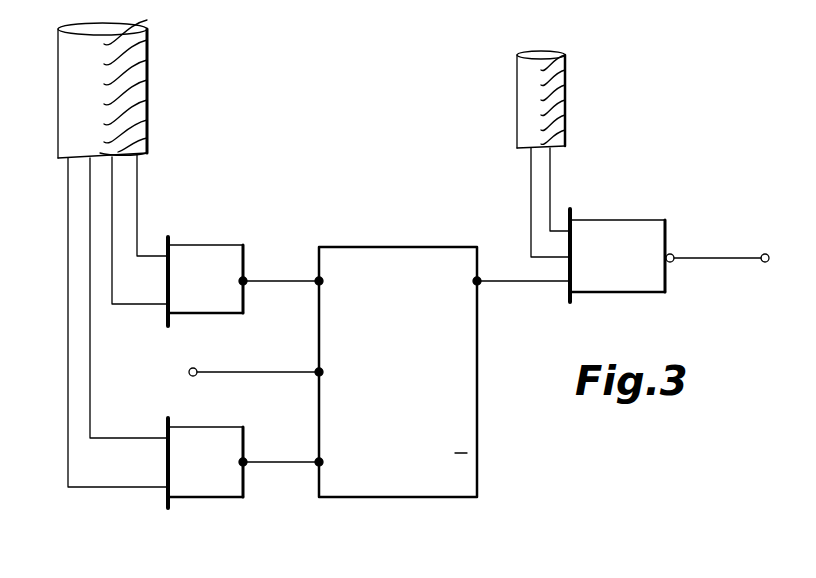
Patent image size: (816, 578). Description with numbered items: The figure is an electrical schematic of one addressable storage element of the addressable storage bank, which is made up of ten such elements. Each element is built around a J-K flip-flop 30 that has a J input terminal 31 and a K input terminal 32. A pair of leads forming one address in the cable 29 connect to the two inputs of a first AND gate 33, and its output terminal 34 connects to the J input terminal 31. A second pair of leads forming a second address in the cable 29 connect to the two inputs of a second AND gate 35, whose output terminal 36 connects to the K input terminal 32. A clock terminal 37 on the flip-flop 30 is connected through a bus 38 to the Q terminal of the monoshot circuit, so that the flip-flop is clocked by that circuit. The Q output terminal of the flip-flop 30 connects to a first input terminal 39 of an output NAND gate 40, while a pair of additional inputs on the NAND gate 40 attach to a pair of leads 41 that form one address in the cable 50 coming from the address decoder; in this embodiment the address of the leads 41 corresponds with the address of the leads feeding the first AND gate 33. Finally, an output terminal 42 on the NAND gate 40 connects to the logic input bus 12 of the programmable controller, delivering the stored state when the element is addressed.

The logic input bus 12 is at (768, 252).
The cable 29 is at (147, 84).
The J-K flip-flop 30 is at (412, 367).
The J input terminal 31 is at (317, 278).
The K input terminal 32 is at (317, 465).
The first AND gate 33 is at (222, 245).
The output terminal 34 is at (245, 283).
The second AND gate 35 is at (197, 498).
The output terminal 36 is at (246, 460).
The clock terminal 37 is at (317, 370).
The bus 38 is at (190, 370).
The first input terminal 39 is at (568, 284).
The output NAND gate 40 is at (638, 220).
The leads 41 is at (550, 175).
The output terminal 42 is at (675, 252).
The cable 50 is at (565, 75).